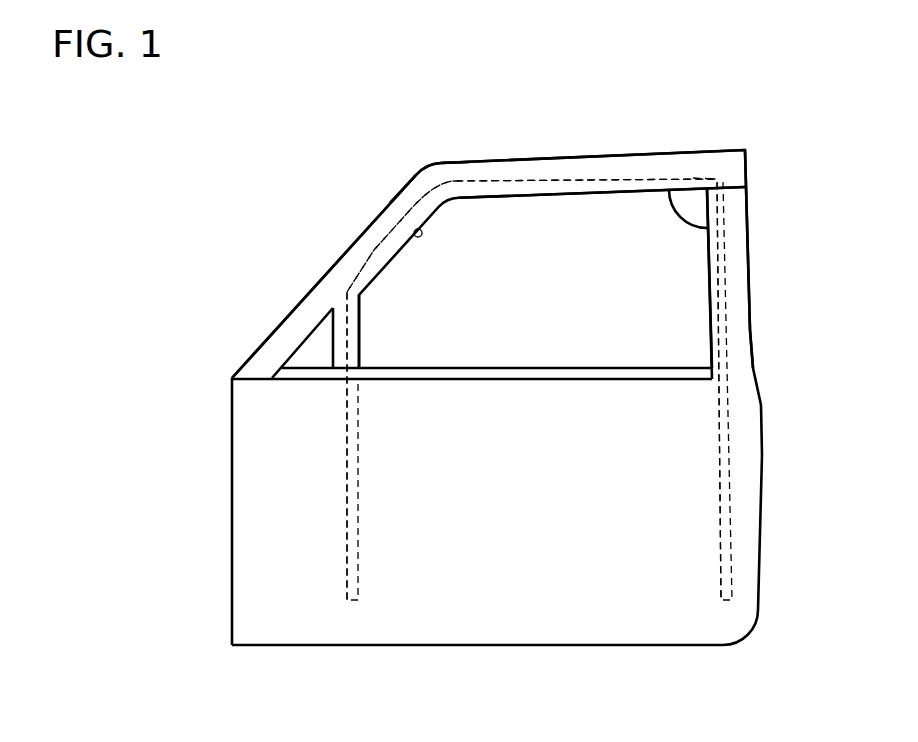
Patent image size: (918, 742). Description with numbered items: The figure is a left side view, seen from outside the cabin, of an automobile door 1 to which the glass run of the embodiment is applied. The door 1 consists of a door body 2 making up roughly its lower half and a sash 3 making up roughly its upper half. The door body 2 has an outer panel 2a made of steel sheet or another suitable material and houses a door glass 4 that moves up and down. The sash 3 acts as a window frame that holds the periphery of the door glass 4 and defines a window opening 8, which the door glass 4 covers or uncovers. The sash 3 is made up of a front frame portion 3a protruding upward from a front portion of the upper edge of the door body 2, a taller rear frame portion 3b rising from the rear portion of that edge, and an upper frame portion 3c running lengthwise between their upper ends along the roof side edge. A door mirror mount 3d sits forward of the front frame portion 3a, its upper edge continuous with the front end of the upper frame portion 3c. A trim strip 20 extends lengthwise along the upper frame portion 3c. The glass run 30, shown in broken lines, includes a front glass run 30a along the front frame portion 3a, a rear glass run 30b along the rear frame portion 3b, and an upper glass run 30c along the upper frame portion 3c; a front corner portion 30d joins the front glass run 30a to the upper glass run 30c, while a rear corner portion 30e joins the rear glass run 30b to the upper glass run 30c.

The door 1 is at (258, 307).
The door body 2 is at (254, 535).
The outer panel 2a is at (510, 620).
The sash 3 is at (470, 162).
The front frame portion 3a is at (330, 353).
The rear frame portion 3b is at (748, 238).
The upper frame portion 3c is at (658, 165).
The door mirror mount 3d is at (318, 330).
The door glass 4 is at (700, 333).
The window opening 8 is at (414, 230).
The trim strip 20 is at (427, 190).
The glass run 30 is at (537, 185).
The front glass run 30a is at (347, 470).
The rear glass run 30b is at (732, 488).
The upper glass run 30c is at (593, 180).
The front corner portion 30d is at (373, 255).
The rear corner portion 30e is at (693, 178).